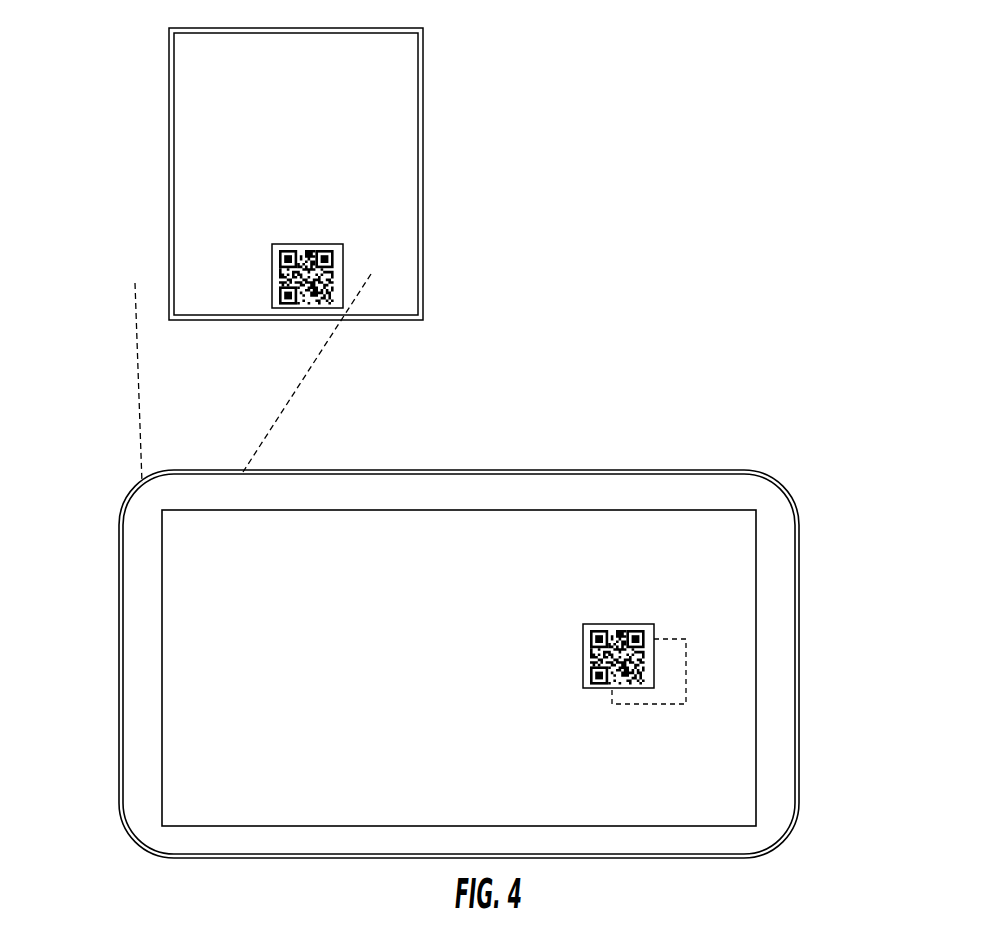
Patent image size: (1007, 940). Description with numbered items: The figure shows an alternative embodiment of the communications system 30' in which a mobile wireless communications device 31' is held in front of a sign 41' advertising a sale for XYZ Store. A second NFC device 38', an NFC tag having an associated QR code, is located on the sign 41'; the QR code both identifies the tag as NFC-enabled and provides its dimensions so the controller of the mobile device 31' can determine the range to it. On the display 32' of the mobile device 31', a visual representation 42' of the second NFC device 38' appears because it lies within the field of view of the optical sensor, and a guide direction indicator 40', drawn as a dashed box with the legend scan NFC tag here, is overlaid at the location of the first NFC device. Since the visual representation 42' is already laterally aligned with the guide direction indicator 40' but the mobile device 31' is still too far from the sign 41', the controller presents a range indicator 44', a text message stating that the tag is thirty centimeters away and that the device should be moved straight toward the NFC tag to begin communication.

The communications system 30' is at (262, 171).
The sign 41' is at (314, 174).
The second NFC device 38' is at (377, 232).
The mobile wireless communications device 31' is at (488, 635).
The display 32' is at (509, 619).
The range indicator 44' is at (592, 508).
The visual representation 42' is at (719, 611).
The guide direction indicator 40' is at (734, 683).